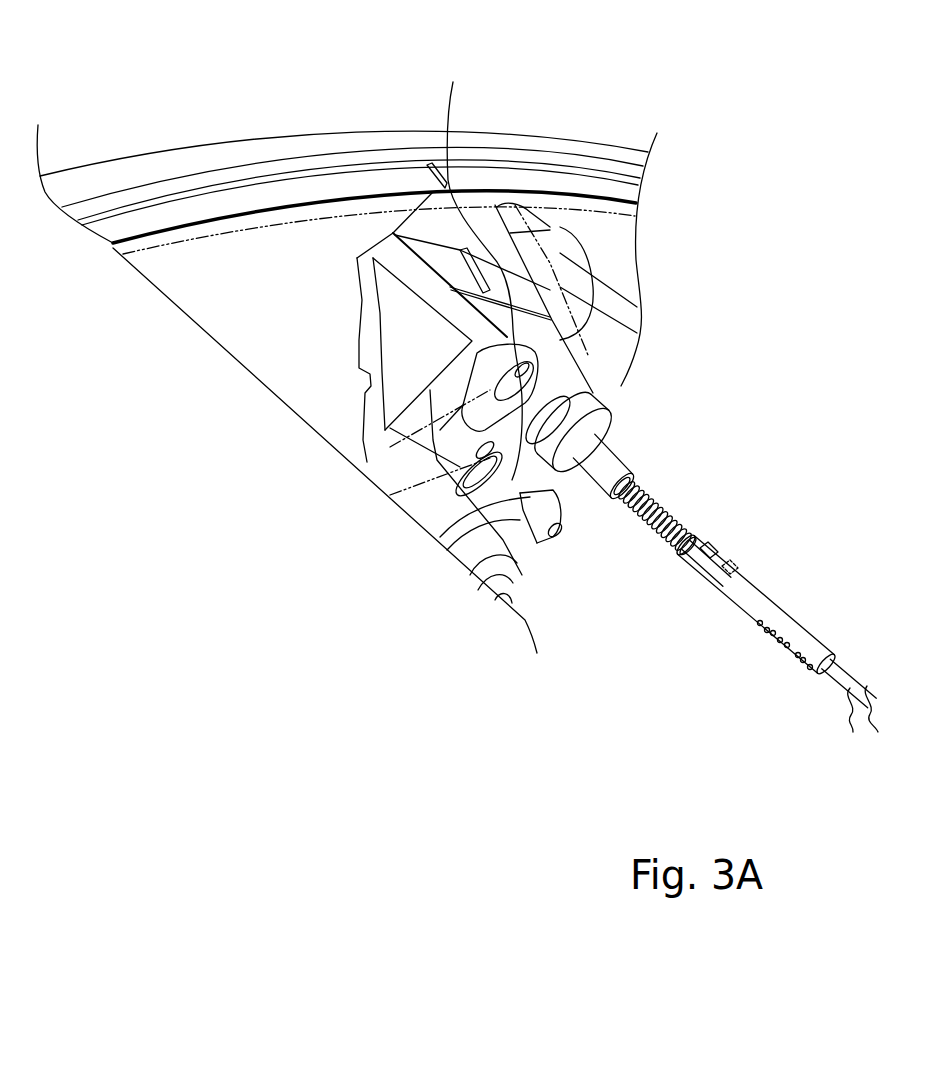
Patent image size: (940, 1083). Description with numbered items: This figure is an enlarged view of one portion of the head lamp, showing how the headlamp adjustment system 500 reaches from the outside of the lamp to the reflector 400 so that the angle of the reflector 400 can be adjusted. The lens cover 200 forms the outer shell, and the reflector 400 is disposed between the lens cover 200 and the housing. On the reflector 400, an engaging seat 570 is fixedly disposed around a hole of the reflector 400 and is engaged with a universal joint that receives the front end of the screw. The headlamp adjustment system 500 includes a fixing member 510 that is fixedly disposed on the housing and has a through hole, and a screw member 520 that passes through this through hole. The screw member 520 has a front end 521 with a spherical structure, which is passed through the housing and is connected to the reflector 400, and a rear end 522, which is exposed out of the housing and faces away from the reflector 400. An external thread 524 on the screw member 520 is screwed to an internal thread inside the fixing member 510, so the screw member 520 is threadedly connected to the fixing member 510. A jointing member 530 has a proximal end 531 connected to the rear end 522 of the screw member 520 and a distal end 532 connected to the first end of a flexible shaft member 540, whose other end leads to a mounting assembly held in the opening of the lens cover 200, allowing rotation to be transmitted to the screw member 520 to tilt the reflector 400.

The lens cover 200 is at (208, 150).
The reflector 400 is at (262, 356).
The headlamp adjustment system 500 is at (724, 432).
The fixing member 510 is at (616, 446).
The screw member 520 is at (597, 552).
The front end 521 is at (553, 537).
The rear end 522 is at (742, 585).
The external thread 524 is at (686, 538).
The jointing member 530 is at (789, 555).
The proximal end 531 is at (690, 540).
The distal end 532 is at (831, 609).
The flexible shaft member 540 is at (842, 697).
The engaging seat 570 is at (475, 263).